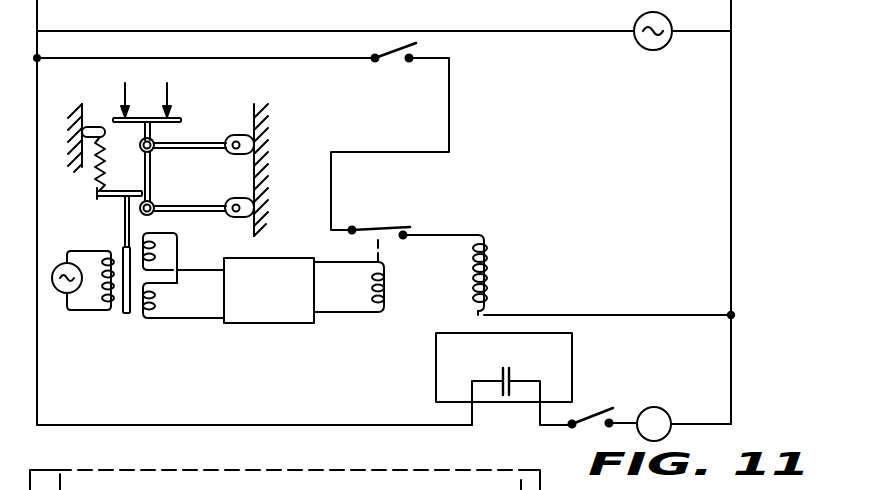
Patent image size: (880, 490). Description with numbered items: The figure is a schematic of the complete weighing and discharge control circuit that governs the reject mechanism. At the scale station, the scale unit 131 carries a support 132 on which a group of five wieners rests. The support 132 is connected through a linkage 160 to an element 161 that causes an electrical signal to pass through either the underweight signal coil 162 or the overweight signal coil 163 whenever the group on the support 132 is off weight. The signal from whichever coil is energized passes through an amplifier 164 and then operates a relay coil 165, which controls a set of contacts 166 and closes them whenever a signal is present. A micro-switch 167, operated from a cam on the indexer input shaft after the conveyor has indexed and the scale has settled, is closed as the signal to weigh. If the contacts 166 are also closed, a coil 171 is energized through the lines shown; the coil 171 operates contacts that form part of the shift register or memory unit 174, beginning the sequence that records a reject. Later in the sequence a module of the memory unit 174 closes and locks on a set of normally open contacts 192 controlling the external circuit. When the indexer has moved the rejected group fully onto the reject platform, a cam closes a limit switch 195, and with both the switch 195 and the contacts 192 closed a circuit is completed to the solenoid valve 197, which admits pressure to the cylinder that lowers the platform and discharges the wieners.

The scale unit 131 is at (183, 109).
The support 132 is at (118, 114).
The linkage 160 is at (156, 151).
The element 161 is at (127, 316).
The underweight signal coil 162 is at (163, 258).
The overweight signal coil 163 is at (156, 306).
The amplifier 164 is at (298, 312).
The relay coil 165 is at (386, 304).
The contacts 166 is at (378, 232).
The micro-switch 167 is at (375, 61).
The coil 171 is at (496, 265).
The memory unit 174 is at (436, 338).
The normally open contacts 192 is at (500, 372).
The limit switch 195 is at (579, 415).
The solenoid valve 197 is at (718, 386).